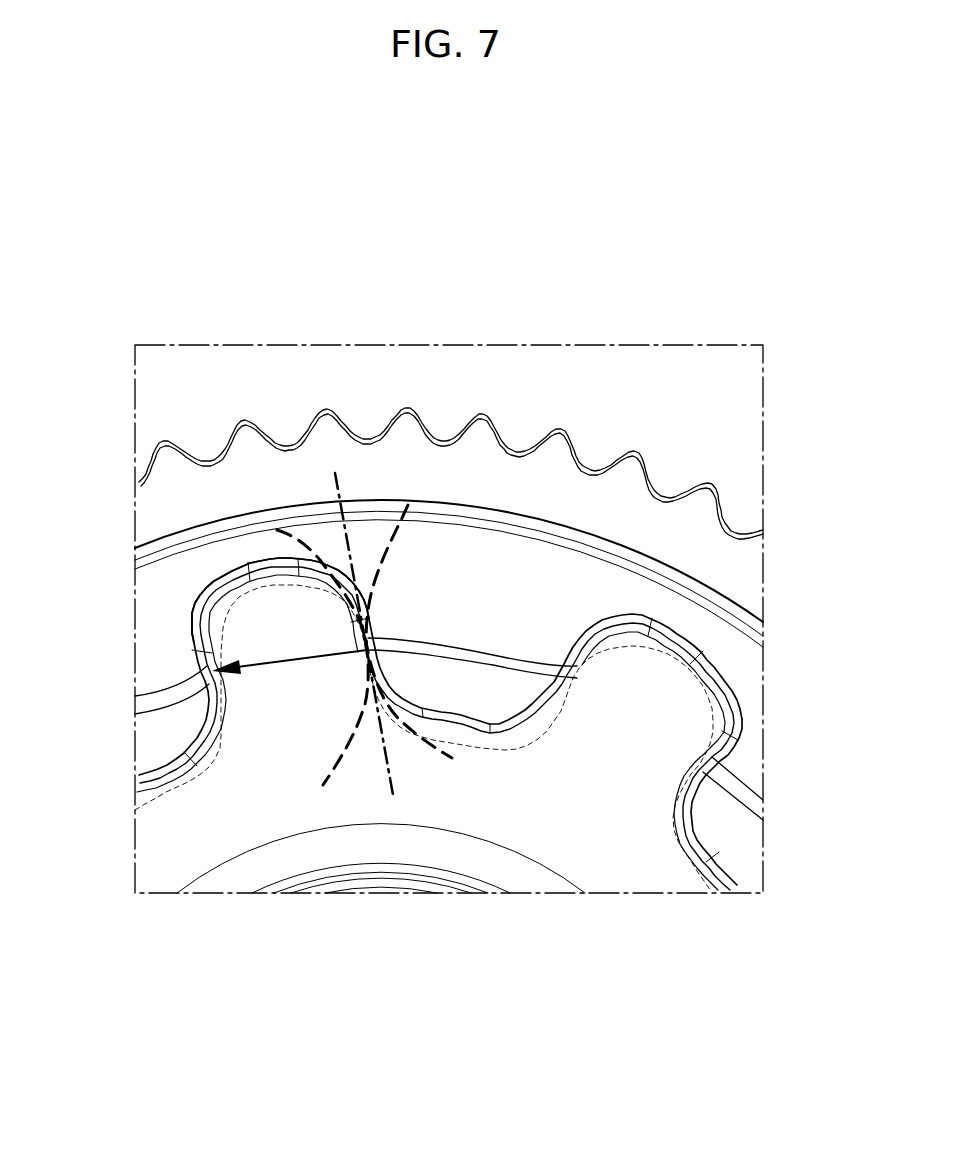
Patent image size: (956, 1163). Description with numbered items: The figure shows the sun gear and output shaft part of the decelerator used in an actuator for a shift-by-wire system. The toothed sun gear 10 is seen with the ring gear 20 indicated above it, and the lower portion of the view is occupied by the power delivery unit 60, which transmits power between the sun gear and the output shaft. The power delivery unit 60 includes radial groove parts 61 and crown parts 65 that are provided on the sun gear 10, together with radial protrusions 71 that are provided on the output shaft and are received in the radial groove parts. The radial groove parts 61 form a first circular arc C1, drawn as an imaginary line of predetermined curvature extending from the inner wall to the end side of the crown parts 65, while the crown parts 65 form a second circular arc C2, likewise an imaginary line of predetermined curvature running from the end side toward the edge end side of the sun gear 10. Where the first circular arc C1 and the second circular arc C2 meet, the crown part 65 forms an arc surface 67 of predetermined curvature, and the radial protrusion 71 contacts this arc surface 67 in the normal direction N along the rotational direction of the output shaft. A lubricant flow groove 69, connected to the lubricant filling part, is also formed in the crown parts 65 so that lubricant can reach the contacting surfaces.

The sun gear 10 is at (617, 513).
The ring gear 20 is at (593, 380).
The power delivery unit 60 is at (598, 617).
The radial groove parts 61 is at (224, 582).
The crown parts 65 is at (467, 697).
The arc surface 67 is at (365, 653).
The lubricant flow groove 69 is at (167, 681).
The radial protrusions 71 is at (205, 748).
The first circular arc C1 is at (310, 555).
The second circular arc C2 is at (392, 536).
The normal direction N is at (289, 680).